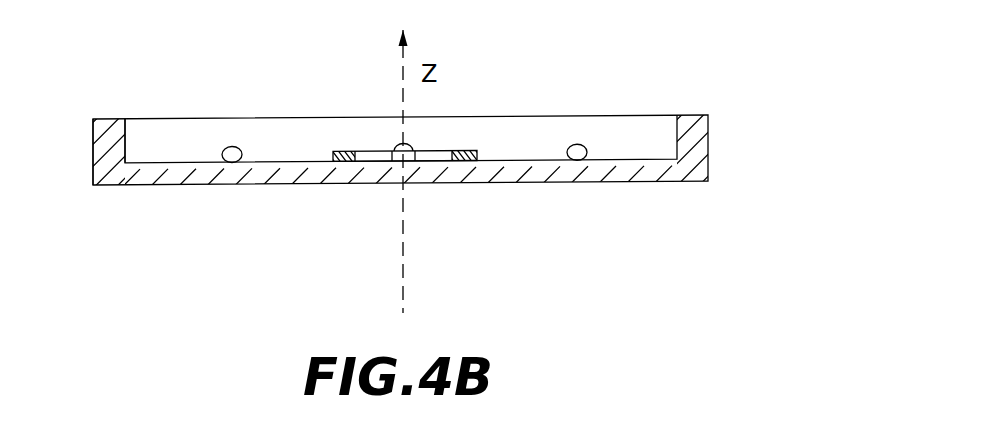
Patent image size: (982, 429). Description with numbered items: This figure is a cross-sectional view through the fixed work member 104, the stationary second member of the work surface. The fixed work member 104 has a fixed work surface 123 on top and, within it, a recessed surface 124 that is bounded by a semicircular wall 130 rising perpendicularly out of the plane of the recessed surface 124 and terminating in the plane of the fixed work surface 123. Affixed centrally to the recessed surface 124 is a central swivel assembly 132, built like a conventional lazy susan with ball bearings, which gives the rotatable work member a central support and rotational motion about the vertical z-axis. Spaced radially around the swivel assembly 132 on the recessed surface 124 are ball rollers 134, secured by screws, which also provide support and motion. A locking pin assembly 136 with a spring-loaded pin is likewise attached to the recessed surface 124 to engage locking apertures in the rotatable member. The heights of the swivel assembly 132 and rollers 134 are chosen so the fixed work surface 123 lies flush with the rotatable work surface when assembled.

The fixed work member 104 is at (745, 147).
The fixed work surface 123 is at (590, 100).
The recessed surface 124 is at (287, 163).
The semicircular wall 130 is at (125, 147).
The central swivel assembly 132 is at (463, 158).
The rollers 134 is at (587, 153).
The locking pin assembly 136 is at (428, 138).